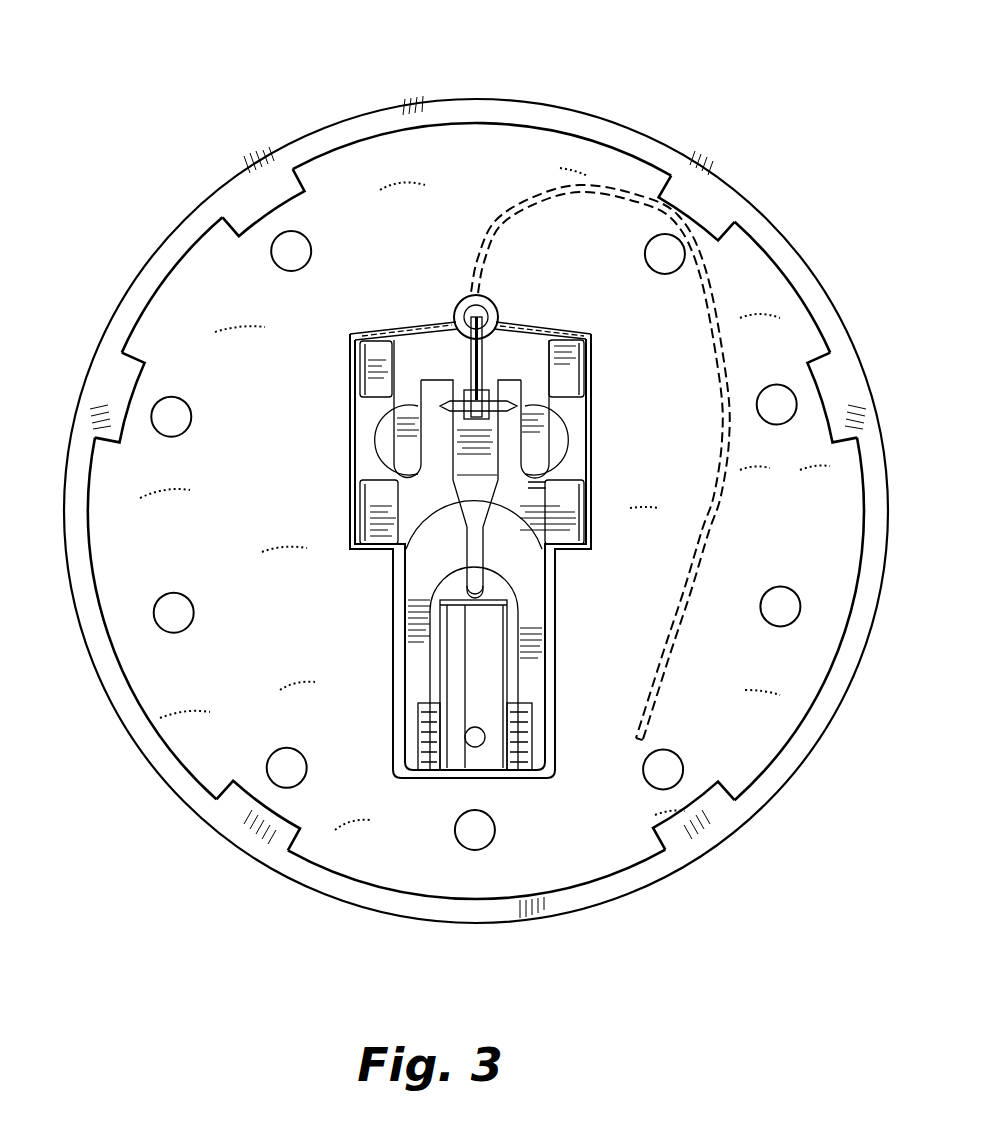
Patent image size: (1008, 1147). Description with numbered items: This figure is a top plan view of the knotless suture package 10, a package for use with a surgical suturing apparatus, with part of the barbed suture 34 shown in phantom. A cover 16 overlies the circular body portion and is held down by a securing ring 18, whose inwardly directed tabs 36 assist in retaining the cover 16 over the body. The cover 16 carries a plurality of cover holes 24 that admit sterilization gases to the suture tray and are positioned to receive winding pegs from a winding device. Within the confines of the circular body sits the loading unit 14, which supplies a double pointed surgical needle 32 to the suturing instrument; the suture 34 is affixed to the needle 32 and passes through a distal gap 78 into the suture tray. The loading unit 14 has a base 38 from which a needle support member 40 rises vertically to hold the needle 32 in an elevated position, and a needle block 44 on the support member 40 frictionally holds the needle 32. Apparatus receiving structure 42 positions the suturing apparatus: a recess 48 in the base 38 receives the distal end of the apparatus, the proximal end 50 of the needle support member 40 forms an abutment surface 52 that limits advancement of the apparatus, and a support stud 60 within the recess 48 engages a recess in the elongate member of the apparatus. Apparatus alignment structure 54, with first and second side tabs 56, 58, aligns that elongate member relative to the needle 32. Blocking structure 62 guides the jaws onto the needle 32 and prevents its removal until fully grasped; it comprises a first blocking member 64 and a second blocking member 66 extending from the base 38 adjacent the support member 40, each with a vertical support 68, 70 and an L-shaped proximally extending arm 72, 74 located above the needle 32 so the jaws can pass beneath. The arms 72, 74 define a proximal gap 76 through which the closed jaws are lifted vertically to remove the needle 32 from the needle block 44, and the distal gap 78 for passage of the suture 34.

The suture package 10 is at (268, 85).
The loading unit 14 is at (335, 472).
The cover 16 is at (133, 570).
The ring 18 is at (138, 292).
The cover holes 24 is at (173, 625).
The double pointed surgical needle 32 is at (443, 403).
The barbed suture 34 is at (722, 485).
The inwardly directed tabs 36 is at (108, 392).
The base 38 is at (375, 548).
The needle support member 40 is at (470, 463).
The apparatus receiving structure 42 is at (375, 762).
The needle block 44 is at (488, 395).
The recess 48 is at (477, 687).
The proximal end 50 is at (473, 557).
The abutment surface 52 is at (476, 594).
The apparatus alignment structure 54 is at (562, 772).
The first side tab 56 is at (423, 732).
The second side tab 58 is at (528, 742).
The support stud 60 is at (468, 744).
The blocking structure 62 is at (328, 340).
The first blocking member 64 is at (390, 347).
The second blocking member 66 is at (537, 350).
The vertical support 68 is at (437, 308).
The vertical support 70 is at (533, 316).
The L-shaped proximally extending arm 72 is at (400, 395).
The L-shaped proximally extending arm 74 is at (540, 410).
The proximal gap 76 is at (510, 456).
The distal gap 78 is at (452, 327).